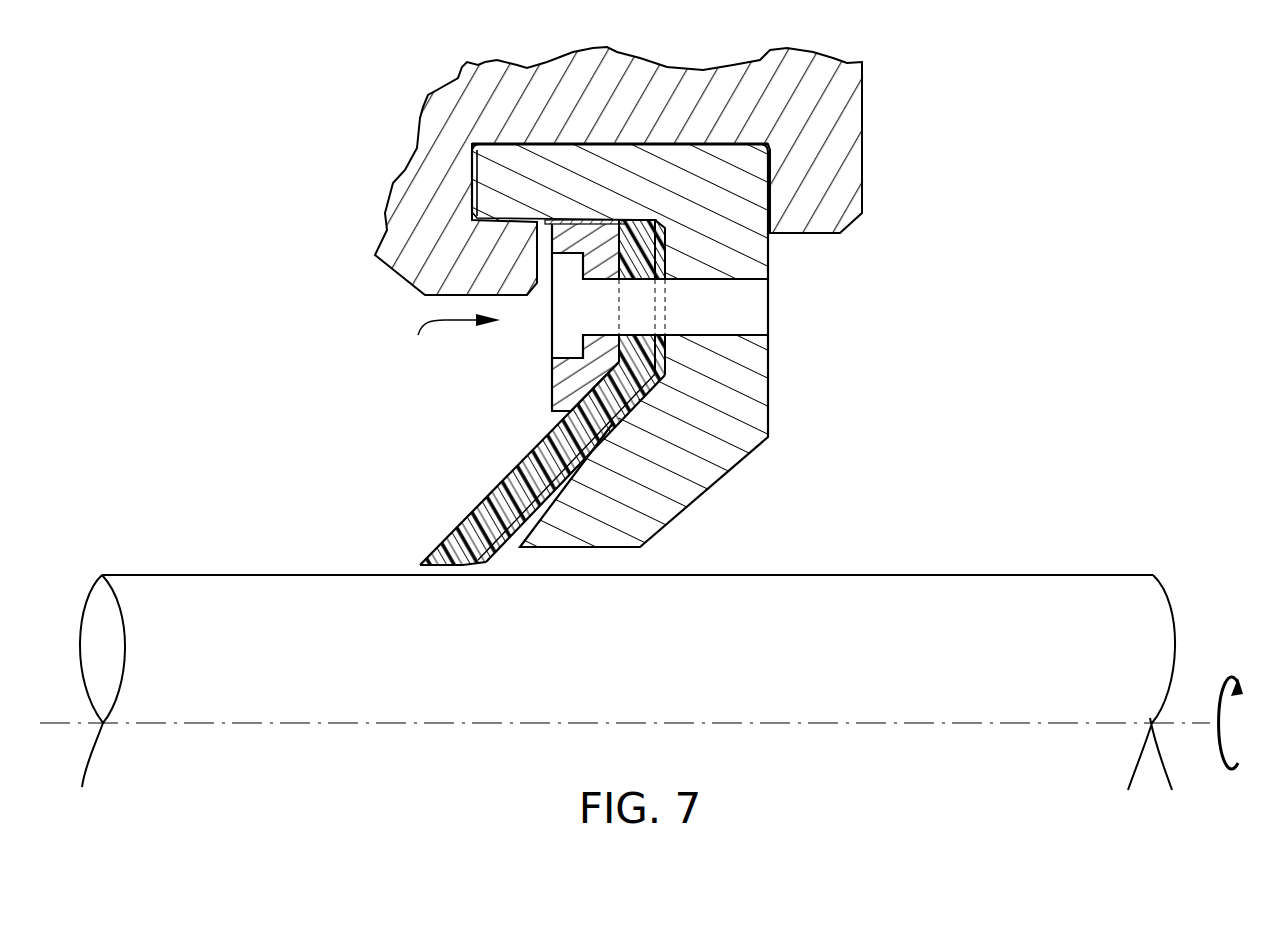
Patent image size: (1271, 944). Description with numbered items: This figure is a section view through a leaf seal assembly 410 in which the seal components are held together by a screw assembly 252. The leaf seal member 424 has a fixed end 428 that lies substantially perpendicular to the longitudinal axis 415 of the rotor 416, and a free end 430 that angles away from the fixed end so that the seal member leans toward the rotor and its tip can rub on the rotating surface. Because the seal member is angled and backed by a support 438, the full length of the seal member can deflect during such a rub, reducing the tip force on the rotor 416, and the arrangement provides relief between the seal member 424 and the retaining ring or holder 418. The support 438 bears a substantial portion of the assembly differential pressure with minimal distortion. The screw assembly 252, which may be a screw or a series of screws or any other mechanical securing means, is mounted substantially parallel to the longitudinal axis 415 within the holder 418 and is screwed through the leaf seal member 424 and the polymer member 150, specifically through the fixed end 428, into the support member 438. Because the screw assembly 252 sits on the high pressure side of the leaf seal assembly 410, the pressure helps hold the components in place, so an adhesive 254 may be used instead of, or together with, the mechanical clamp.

The holder 418 is at (613, 193).
The adhesive 254 is at (573, 221).
The fixed end 428 is at (663, 252).
The screw assembly 252 is at (742, 316).
The support 438 is at (733, 377).
The polymer member 150 is at (560, 443).
The leaf seal member 424 is at (558, 461).
The free end 430 is at (458, 566).
The leaf seal assembly 410 is at (448, 335).
The rotor 416 is at (1123, 678).
The longitudinal axis 415 is at (1182, 725).